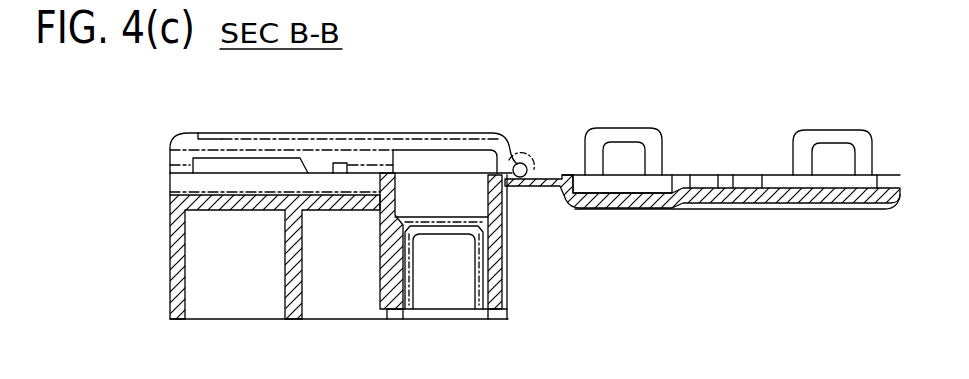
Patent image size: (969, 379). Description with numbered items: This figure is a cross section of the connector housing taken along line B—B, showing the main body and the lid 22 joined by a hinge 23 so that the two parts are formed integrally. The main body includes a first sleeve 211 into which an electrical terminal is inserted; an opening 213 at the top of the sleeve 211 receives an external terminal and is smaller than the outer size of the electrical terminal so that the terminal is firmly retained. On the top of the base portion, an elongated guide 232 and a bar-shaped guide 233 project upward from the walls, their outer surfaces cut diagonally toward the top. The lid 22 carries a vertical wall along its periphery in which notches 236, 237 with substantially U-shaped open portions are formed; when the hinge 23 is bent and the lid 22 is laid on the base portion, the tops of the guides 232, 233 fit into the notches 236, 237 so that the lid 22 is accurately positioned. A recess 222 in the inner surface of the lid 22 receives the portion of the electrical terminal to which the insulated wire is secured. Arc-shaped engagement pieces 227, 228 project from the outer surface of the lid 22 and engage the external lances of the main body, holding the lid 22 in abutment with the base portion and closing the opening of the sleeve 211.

The lid 22 is at (758, 211).
The hinge 23 is at (540, 163).
The first sleeve 211 is at (463, 198).
The opening 213 is at (470, 318).
The recess 222 is at (657, 186).
The arc-shaped engagement piece 227 is at (838, 130).
The arc-shaped engagement piece 228 is at (613, 128).
The elongated guide 232 is at (226, 158).
The bar-shaped guide 233 is at (340, 165).
The notch 236 is at (817, 198).
The notch 237 is at (723, 175).